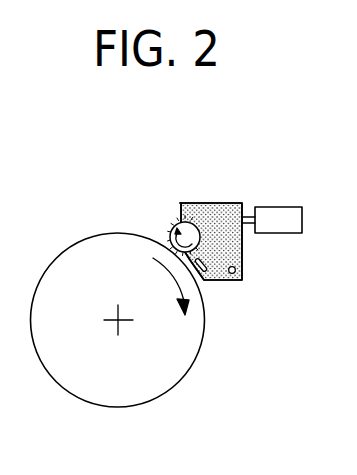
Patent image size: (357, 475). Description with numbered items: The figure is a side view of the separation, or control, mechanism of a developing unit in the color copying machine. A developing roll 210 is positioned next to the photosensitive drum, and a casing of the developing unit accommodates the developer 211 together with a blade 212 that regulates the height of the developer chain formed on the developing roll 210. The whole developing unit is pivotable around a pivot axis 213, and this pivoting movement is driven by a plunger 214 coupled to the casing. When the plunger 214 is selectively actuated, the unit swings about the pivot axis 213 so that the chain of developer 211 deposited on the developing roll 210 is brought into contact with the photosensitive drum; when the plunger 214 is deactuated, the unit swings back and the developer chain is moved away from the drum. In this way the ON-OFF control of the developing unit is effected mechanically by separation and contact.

The developing roll 210 is at (177, 222).
The developer 211 is at (228, 204).
The blade 212 is at (212, 282).
The pivot axis 213 is at (236, 270).
The plunger 214 is at (278, 207).